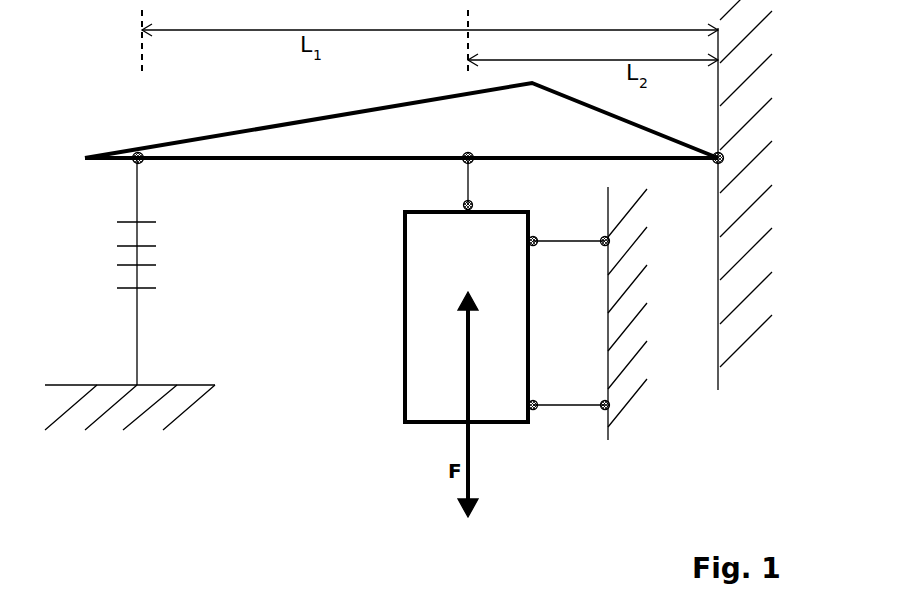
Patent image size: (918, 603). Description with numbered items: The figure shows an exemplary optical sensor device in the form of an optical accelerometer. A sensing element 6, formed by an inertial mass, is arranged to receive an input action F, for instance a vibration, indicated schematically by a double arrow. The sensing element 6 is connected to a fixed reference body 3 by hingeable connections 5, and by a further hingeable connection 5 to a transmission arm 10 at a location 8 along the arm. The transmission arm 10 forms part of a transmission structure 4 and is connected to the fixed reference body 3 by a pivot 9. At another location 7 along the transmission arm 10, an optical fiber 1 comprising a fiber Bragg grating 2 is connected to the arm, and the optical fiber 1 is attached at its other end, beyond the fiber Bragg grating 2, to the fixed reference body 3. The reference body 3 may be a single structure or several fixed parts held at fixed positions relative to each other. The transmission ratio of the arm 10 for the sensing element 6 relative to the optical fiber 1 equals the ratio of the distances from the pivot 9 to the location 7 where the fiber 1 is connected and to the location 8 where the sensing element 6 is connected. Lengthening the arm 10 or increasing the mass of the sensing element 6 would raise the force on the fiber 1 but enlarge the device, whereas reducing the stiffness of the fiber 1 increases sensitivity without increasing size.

The optical fiber 1 is at (138, 192).
The fiber bragg grating 2 is at (137, 278).
The fixed reference body 3 is at (193, 385).
The transmission structure 4 is at (340, 160).
The hingeable connection 5 is at (466, 182).
The sensing element 6 is at (403, 297).
The location 7 is at (142, 162).
The location 8 is at (473, 163).
The pivot 9 is at (716, 160).
The transmission arm 10 is at (245, 160).